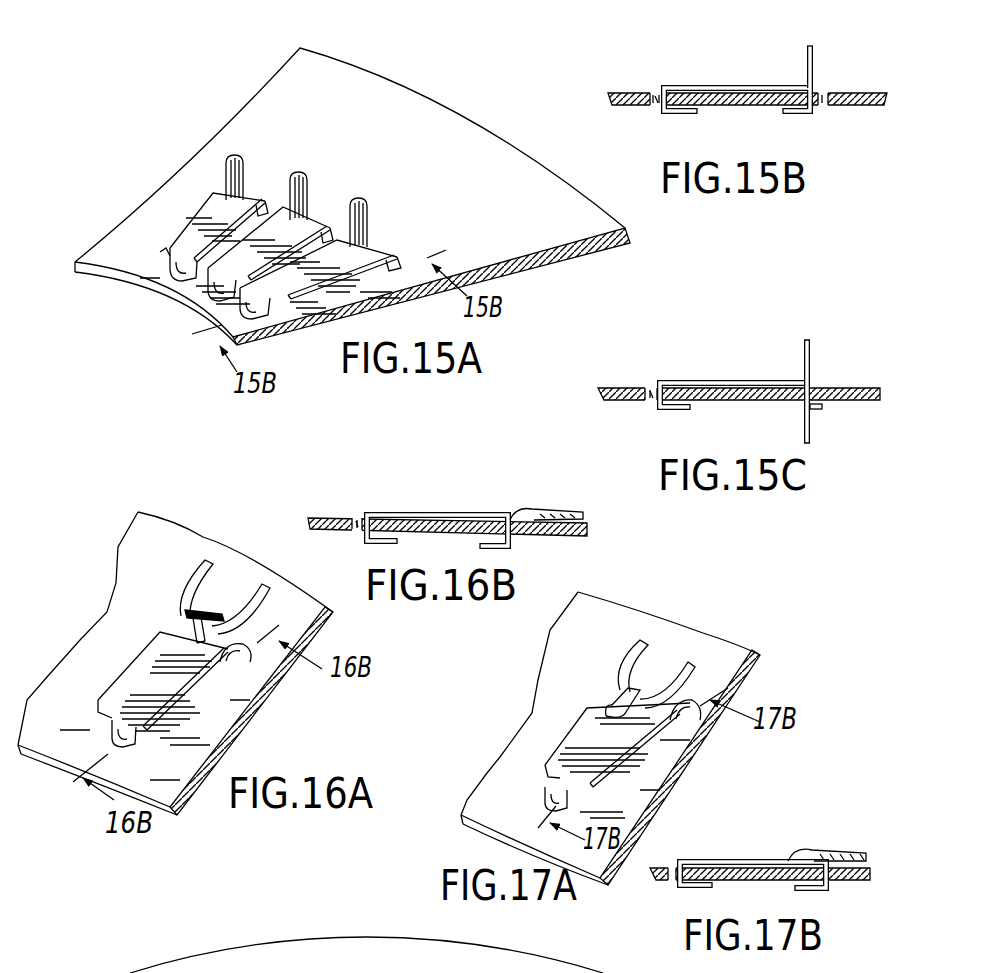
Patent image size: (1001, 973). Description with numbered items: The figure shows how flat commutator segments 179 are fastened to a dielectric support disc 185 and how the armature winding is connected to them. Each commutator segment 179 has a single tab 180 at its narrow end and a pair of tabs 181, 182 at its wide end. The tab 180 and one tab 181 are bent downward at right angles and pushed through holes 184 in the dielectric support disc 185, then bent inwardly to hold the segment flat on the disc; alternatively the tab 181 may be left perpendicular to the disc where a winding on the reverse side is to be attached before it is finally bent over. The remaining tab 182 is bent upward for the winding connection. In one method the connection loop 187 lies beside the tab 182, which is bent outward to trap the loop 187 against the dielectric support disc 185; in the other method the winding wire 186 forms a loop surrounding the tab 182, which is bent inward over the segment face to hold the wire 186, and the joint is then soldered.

In FIG. 15A, the commutator segment 179 is at (205, 218).
In FIG. 15B, the commutator segment 179 is at (758, 72).
In FIG. 15C, the commutator segment 179 is at (744, 369).
In FIG. 16B, the commutator segment 179 is at (440, 512).
In FIG. 16A, the commutator segment 179 is at (143, 672).
In FIG. 17A, the commutator segment 179 is at (583, 738).
In FIG. 17B, the commutator segment 179 is at (748, 861).
In FIG. 15A, the tab 180 is at (220, 283).
In FIG. 15B, the tab 180 is at (683, 116).
In FIG. 15C, the tab 180 is at (671, 411).
In FIG. 16B, the tab 180 is at (382, 542).
In FIG. 16A, the tab 180 is at (124, 742).
In FIG. 17A, the tab 180 is at (546, 790).
In FIG. 17B, the tab 180 is at (692, 887).
In FIG. 15A, the tab 181 is at (294, 222).
In FIG. 15B, the tab 181 is at (790, 115).
In FIG. 15C, the tab 181 is at (811, 434).
In FIG. 16B, the tab 181 is at (494, 548).
In FIG. 16A, the tab 181 is at (256, 640).
In FIG. 17A, the tab 181 is at (668, 702).
In FIG. 17B, the tab 181 is at (832, 892).
In FIG. 15A, the tab 182 is at (310, 176).
In FIG. 15B, the tab 182 is at (815, 52).
In FIG. 15C, the tab 182 is at (826, 333).
In FIG. 16B, the tab 182 is at (532, 510).
In FIG. 16A, the tab 182 is at (183, 618).
In FIG. 17A, the tab 182 is at (614, 702).
In FIG. 17B, the tab 182 is at (816, 832).
In FIG. 15A, the hole 184 is at (163, 269).
In FIG. 15B, the hole 184 is at (657, 92).
In FIG. 15C, the hole 184 is at (653, 384).
In FIG. 16B, the hole 184 is at (357, 516).
In FIG. 16A, the hole 184 is at (107, 735).
In FIG. 17A, the hole 184 is at (547, 800).
In FIG. 15A, the dielectric support disc 185 is at (538, 236).
In FIG. 15B, the dielectric support disc 185 is at (867, 108).
In FIG. 15C, the dielectric support disc 185 is at (868, 376).
In FIG. 16B, the dielectric support disc 185 is at (345, 501).
In FIG. 16A, the dielectric support disc 185 is at (245, 700).
In FIG. 17A, the dielectric support disc 185 is at (738, 645).
In FIG. 17B, the dielectric support disc 185 is at (760, 874).
In FIG. 17A, the spring arm 186 is at (623, 657).
In FIG. 16A, the commutator connection loop 187 is at (195, 580).